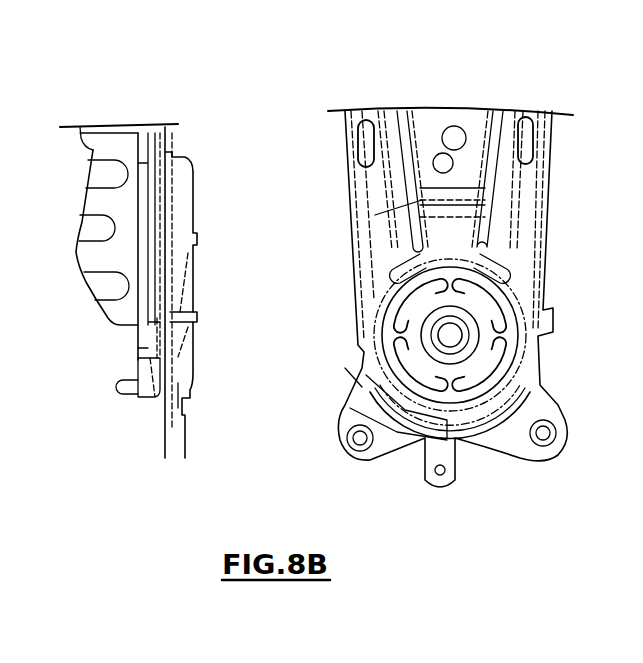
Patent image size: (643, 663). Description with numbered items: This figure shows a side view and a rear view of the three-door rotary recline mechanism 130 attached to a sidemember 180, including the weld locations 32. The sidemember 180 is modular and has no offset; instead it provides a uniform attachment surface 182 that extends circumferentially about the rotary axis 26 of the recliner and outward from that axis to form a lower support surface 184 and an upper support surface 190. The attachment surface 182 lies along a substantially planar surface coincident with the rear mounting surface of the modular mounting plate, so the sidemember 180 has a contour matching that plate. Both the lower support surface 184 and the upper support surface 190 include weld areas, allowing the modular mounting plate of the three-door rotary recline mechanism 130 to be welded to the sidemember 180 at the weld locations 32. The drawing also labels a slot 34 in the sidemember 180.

The three-door rotary recline mechanism 130 is at (122, 446).
The sidemember 180 is at (120, 205).
The uniform attachment surface 182 is at (452, 254).
The slot 34 is at (500, 167).
The upper support surface 190 is at (507, 192).
The lower support surface 184 is at (515, 315).
The weld locations 32 is at (510, 362).
The rotary axis 26 is at (450, 335).